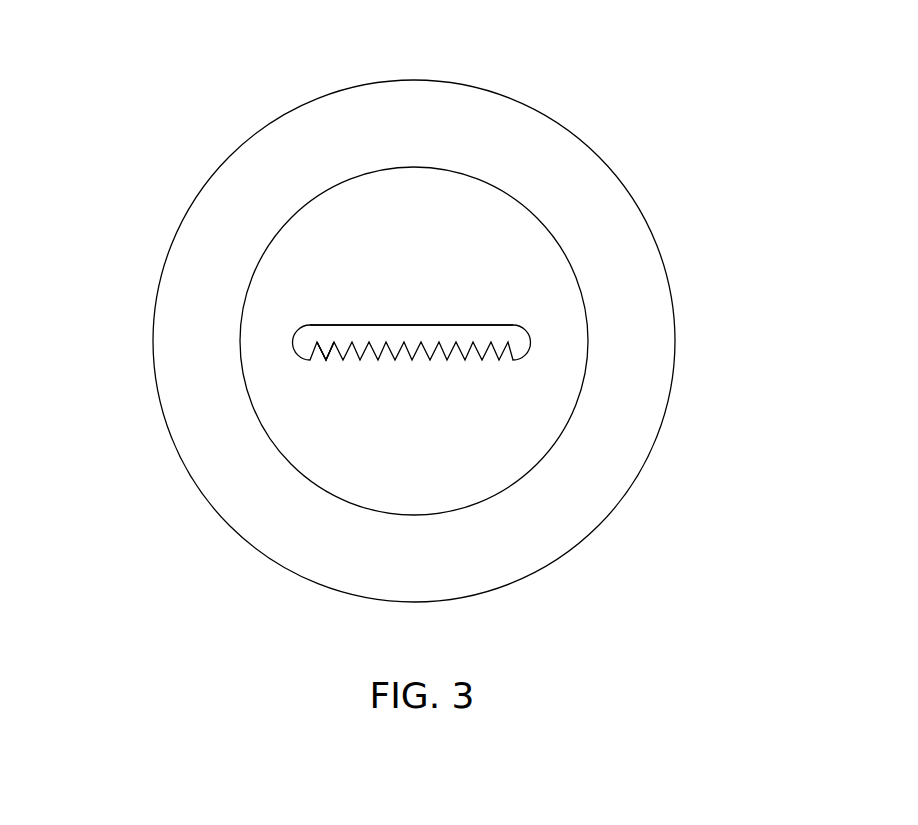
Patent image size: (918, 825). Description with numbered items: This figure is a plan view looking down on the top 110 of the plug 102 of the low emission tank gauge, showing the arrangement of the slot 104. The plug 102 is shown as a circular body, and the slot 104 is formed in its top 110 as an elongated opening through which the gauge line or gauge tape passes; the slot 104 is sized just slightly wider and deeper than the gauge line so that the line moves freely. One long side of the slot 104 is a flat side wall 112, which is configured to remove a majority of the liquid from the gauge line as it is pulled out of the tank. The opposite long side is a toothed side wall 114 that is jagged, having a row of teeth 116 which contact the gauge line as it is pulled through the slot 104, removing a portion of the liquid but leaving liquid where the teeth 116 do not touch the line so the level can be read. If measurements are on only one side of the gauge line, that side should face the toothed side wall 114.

The plug 102 is at (675, 330).
The slot 104 is at (479, 337).
The top 110 is at (483, 453).
The flat side wall 112 is at (342, 323).
The toothed side wall 114 is at (327, 363).
The teeth 116 is at (303, 350).